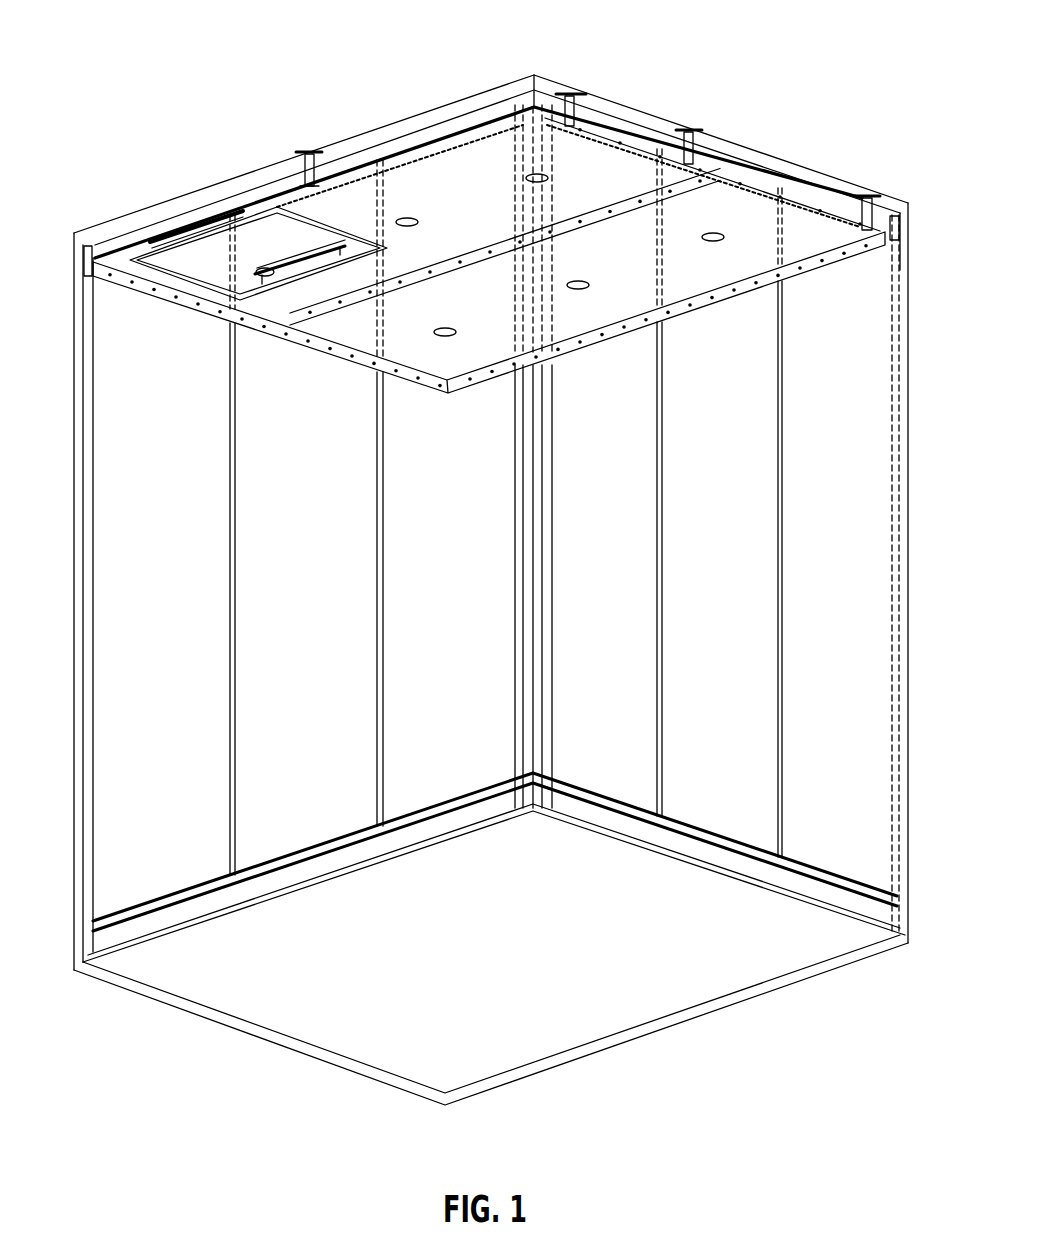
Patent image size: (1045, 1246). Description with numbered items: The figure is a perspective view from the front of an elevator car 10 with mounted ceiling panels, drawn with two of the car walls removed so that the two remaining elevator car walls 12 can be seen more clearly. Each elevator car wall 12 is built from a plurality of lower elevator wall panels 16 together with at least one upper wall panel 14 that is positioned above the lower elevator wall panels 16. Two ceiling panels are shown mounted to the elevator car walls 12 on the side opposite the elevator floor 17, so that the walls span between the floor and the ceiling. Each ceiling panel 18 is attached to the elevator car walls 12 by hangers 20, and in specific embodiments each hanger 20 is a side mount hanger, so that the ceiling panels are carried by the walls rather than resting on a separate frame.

The elevator car 10 is at (168, 56).
The elevator car wall 12 is at (70, 395).
The upper wall panel 14 is at (487, 108).
The lower elevator wall panel 16 is at (170, 818).
The elevator floor 17 is at (700, 962).
The ceiling panel 18 is at (645, 206).
The hanger 20 is at (304, 150).